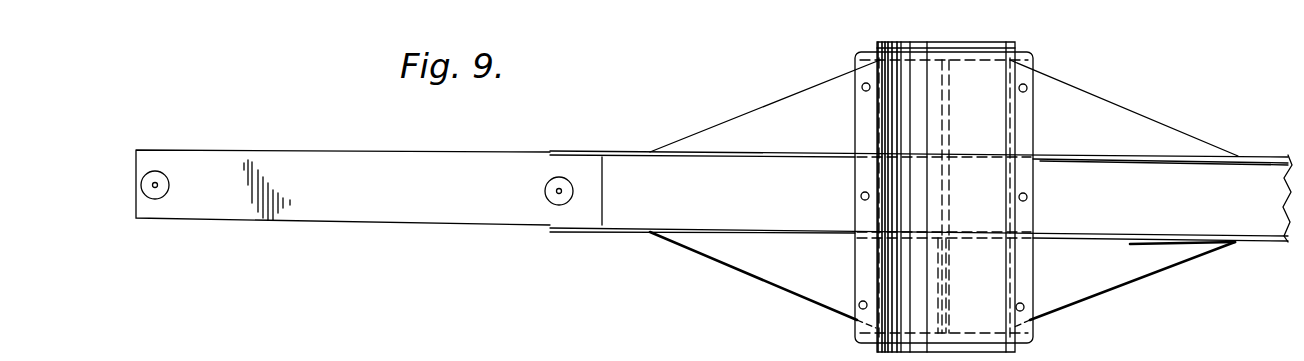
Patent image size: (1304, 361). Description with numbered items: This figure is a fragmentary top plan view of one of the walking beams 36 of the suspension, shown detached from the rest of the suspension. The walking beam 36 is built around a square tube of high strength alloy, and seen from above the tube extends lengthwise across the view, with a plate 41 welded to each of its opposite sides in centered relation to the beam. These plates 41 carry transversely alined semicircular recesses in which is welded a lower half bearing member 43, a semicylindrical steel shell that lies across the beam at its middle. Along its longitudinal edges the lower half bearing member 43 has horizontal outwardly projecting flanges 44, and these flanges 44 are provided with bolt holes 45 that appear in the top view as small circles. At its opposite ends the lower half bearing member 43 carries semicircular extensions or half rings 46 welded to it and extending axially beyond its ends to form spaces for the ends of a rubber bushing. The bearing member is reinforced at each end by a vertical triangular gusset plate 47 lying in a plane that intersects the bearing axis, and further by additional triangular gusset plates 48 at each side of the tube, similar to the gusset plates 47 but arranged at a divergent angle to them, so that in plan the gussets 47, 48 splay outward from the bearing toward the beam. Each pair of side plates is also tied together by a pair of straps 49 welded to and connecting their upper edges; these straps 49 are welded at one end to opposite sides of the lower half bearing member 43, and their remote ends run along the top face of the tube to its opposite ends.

The walking beam 36 is at (286, 150).
The plate 41 is at (1258, 162).
The lower half bearing member 43 is at (980, 118).
The flange 44 is at (855, 124).
The bolt holes 45 is at (861, 86).
The half ring 46 is at (1018, 46).
The reinforcing gusset plate 47 is at (724, 262).
The gusset plate 48 is at (745, 118).
The strap 49 is at (506, 162).